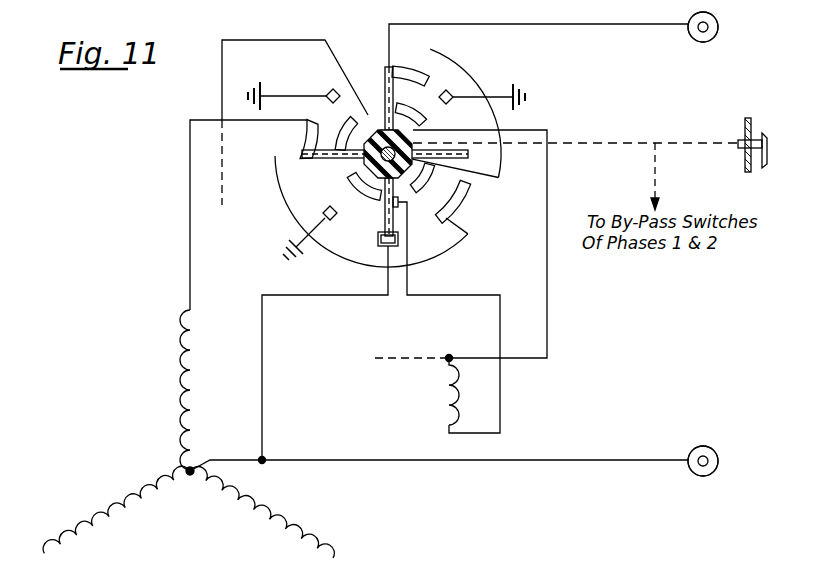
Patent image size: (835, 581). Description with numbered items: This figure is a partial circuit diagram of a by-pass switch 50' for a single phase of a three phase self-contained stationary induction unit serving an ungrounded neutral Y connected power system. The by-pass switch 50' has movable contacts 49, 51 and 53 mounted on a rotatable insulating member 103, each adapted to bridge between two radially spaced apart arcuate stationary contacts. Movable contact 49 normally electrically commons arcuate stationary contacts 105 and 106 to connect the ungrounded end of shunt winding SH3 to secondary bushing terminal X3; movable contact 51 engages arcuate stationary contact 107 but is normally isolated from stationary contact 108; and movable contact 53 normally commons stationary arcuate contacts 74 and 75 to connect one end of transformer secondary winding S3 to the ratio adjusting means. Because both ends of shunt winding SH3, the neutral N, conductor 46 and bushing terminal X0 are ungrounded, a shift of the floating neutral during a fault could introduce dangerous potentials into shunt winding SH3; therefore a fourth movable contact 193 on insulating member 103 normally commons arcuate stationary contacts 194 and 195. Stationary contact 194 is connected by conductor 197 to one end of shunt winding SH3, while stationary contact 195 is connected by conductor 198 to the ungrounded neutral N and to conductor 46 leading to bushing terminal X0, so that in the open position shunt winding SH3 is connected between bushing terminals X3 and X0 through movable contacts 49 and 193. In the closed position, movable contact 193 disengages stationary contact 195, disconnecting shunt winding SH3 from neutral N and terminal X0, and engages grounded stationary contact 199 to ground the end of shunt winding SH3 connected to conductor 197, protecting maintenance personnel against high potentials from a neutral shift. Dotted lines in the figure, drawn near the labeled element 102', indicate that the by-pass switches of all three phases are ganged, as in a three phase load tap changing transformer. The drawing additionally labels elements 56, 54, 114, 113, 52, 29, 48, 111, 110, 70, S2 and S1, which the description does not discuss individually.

The enclosure boundary 56 is at (222, 88).
The conductor 54 is at (190, 231).
The contact with battery 114 is at (334, 89).
The contact with battery 113 is at (448, 103).
The conductor 52 is at (562, 24).
The terminal 29 is at (694, 40).
The secondary bushing terminal X3 is at (717, 35).
The bushing terminal X0 is at (716, 470).
The conductor 48 is at (547, 286).
The by-pass switch 102' is at (773, 146).
The by-pass switch 50' is at (377, 150).
The arcuate segment 111 is at (447, 58).
The arcuate segment 110 is at (284, 214).
The movable contact 53 is at (316, 163).
The movable contact 51 is at (465, 158).
The movable contact 49 is at (385, 92).
The fourth movable contact 193 is at (385, 217).
The arcuate stationary contact 195 is at (379, 244).
The rotatable insulating member 103 is at (366, 168).
The arcuate stationary contact 105 is at (412, 76).
The arcuate stationary contact 106 is at (416, 117).
The arcuate stationary contact 107 is at (424, 189).
The stationary contact 108 is at (462, 203).
The arcuate stationary contact 194 is at (350, 190).
The arcuate stationary contact 75 is at (345, 136).
The arcuate stationary contact 74 is at (303, 141).
The grounded stationary contact 199 is at (332, 221).
The conductor 198 is at (352, 297).
The conductor 197 is at (442, 297).
The connection 70 is at (395, 361).
The shunt winding SH3 is at (449, 402).
The conductor 46 is at (497, 462).
The transformer secondary winding S3 is at (180, 360).
The neutral N is at (187, 468).
The winding S2 is at (131, 491).
The winding S1 is at (300, 520).